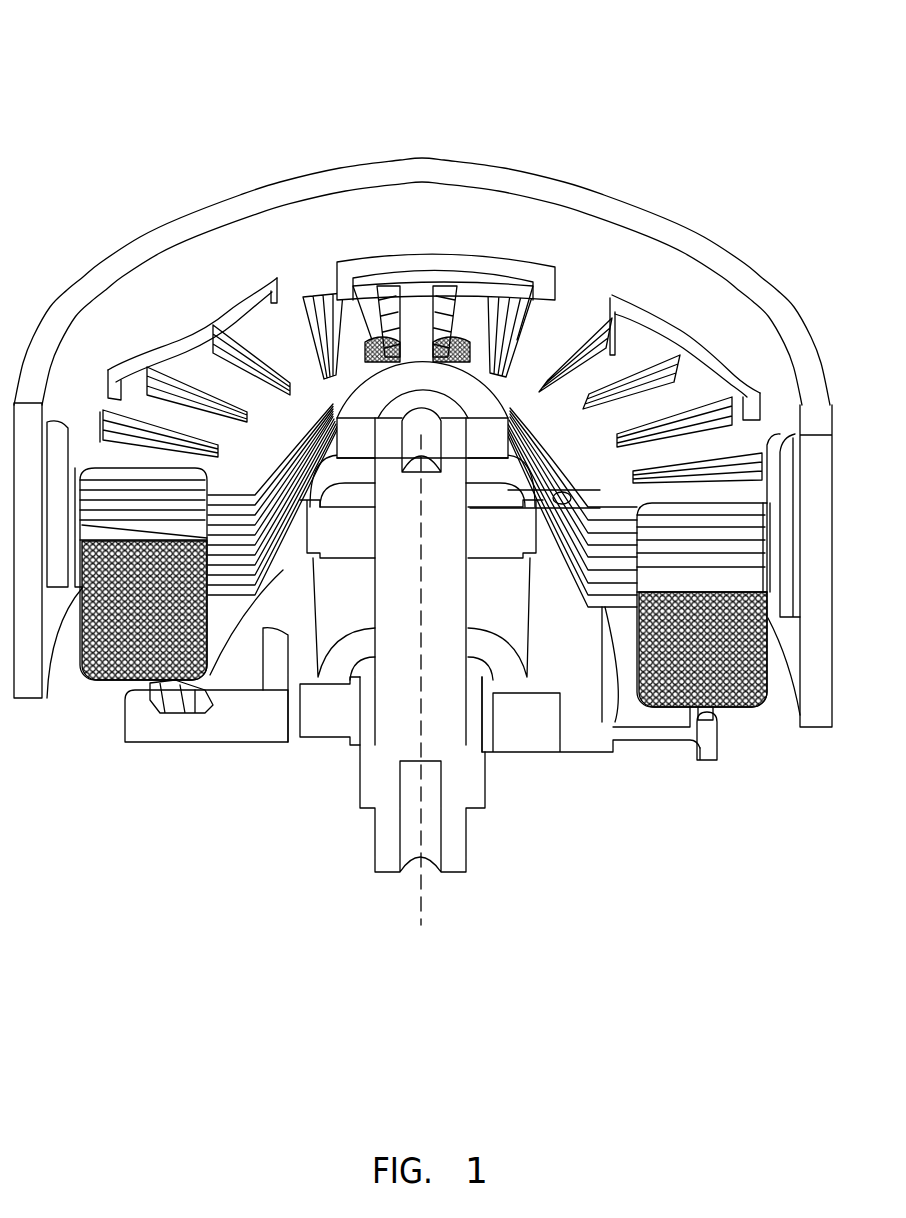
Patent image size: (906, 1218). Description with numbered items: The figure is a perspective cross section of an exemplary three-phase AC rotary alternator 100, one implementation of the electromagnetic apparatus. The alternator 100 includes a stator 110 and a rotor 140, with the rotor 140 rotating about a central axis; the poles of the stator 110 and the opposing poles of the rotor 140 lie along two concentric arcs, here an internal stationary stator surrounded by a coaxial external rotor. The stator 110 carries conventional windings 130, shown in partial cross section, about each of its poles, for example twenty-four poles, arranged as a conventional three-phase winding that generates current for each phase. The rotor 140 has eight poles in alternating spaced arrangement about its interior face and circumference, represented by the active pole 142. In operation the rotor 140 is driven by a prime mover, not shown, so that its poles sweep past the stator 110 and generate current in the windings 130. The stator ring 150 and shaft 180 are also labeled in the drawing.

The alternator 100 is at (218, 72).
The stator 110 is at (193, 744).
The windings 130 is at (697, 765).
The rotor 140 is at (160, 231).
The active pole 142 is at (455, 238).
The stator core 150 is at (733, 332).
The shaft 180 is at (422, 891).